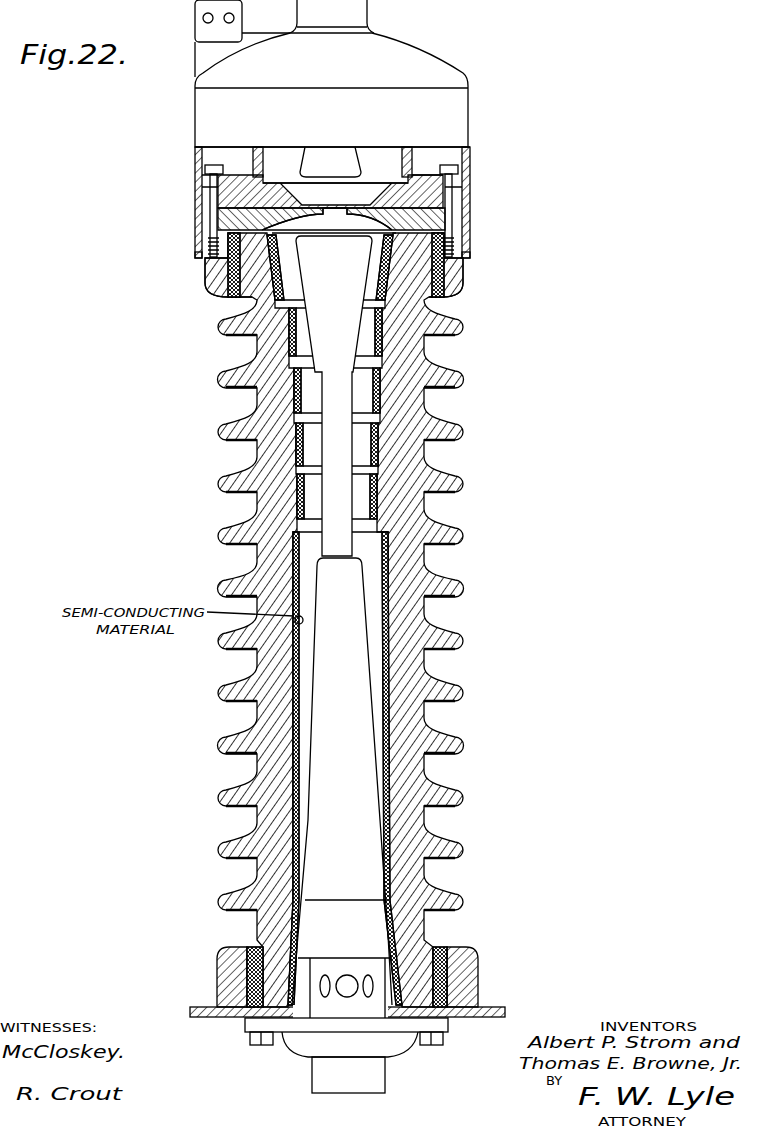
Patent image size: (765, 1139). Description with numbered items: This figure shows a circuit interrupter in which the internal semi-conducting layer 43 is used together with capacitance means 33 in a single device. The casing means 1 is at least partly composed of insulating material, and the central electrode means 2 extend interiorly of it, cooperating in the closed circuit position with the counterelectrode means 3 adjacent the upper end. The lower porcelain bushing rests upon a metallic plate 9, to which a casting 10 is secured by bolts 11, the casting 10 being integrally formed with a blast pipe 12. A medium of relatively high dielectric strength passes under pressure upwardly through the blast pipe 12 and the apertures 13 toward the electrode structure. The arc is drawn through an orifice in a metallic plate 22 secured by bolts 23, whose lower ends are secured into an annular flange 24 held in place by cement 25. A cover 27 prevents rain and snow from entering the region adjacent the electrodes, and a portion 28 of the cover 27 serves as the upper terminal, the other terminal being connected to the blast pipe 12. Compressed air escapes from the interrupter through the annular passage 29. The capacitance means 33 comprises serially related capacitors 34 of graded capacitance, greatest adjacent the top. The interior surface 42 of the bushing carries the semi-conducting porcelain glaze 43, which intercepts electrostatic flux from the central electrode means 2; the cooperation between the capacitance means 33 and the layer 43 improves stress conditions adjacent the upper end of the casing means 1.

The casing means 1 is at (486, 486).
The central electrode means 2 is at (340, 287).
The counterelectrode means 3 is at (381, 169).
The metallic plate 9 is at (494, 1007).
The casting 10 is at (398, 1045).
The bolts 11 is at (444, 1038).
The blast pipe 12 is at (385, 1081).
The apertures 13 is at (366, 976).
The metallic plate 22 is at (464, 216).
The bolts 23 is at (447, 166).
The annular flange 24 is at (459, 283).
The cement 25 is at (438, 297).
The cover 27 is at (452, 64).
The portion of the cover 28 is at (195, 18).
The annular passage 29 is at (464, 258).
The capacitance means 33 is at (303, 358).
The capacitors 34 is at (270, 270).
The interior surface of the bushing 42 is at (390, 571).
The semi-conducting porcelain glaze 43 is at (383, 606).